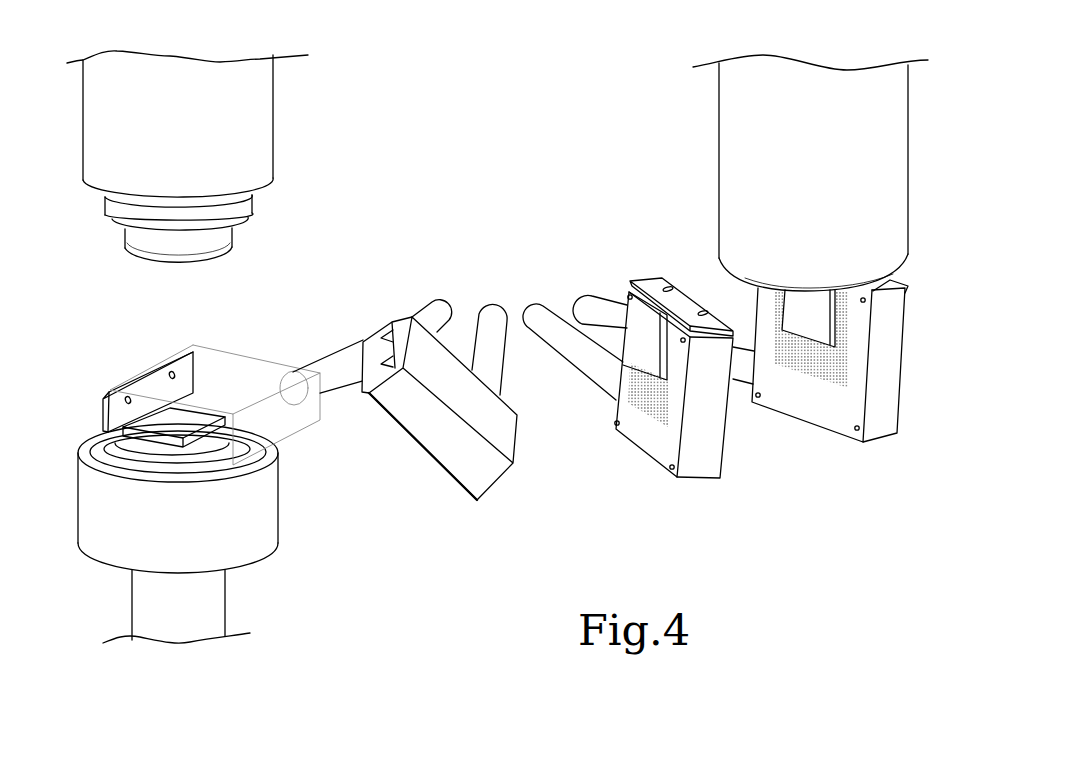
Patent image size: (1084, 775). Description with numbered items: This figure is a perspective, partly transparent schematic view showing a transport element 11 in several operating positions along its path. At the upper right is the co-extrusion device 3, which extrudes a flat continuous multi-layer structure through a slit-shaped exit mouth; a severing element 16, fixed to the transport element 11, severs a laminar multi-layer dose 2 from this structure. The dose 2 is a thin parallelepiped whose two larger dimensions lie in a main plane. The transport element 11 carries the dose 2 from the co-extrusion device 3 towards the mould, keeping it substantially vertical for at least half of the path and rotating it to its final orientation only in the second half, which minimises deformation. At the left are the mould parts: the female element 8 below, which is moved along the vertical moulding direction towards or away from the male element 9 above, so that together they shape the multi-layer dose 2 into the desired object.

The multi-layer dose 2 is at (643, 343).
The co-extrusion device 3 is at (755, 143).
The female element 8 is at (248, 513).
The male element 9 is at (242, 125).
The transport element 11 is at (708, 432).
The severing element 16 is at (652, 286).